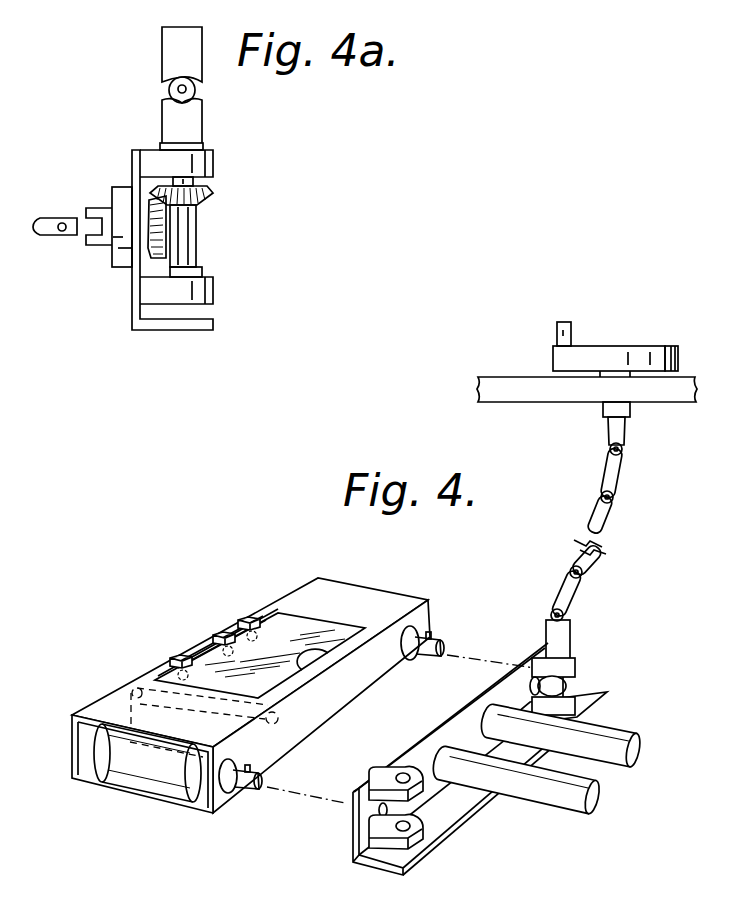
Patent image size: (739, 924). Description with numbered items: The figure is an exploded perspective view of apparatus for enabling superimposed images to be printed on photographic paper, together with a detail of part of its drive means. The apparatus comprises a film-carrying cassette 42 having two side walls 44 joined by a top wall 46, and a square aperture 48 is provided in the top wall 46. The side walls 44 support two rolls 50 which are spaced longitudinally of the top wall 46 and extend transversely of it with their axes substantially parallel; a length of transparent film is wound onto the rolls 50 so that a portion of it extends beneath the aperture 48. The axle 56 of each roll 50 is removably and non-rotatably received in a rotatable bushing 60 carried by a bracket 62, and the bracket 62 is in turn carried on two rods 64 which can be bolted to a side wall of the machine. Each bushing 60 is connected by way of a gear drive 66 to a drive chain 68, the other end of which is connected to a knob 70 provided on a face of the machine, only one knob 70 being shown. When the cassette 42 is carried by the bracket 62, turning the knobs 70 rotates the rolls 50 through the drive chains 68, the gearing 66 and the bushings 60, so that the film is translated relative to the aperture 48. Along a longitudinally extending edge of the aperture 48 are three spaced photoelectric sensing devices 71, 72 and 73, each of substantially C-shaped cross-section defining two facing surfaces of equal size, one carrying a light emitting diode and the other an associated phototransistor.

In FIG. 4, the film-carrying cassette 42 is at (368, 585).
In FIG. 4, the side walls 44 is at (335, 716).
In FIG. 4, the top wall 46 is at (187, 722).
In FIG. 4, the square aperture 48 is at (322, 666).
In FIG. 4, the rolls 50 is at (178, 780).
In FIG. 4A, the axle 56 is at (50, 218).
In FIG. 4, the axle 56 is at (432, 643).
In FIG. 4A, the rotatable bushing 60 is at (95, 248).
In FIG. 4, the bracket 62 is at (421, 736).
In FIG. 4, the rods 64 is at (637, 753).
In FIG. 4A, the gear drive 66 is at (200, 248).
In FIG. 4, the gear drive 66 is at (553, 692).
In FIG. 4A, the drive chain 68 is at (163, 55).
In FIG. 4, the drive chain 68 is at (607, 481).
In FIG. 4, the knob 70 is at (625, 348).
In FIG. 4, the photoelectric sensing device 71 is at (170, 662).
In FIG. 4, the photoelectric sensing device 72 is at (213, 638).
In FIG. 4, the photoelectric sensing device 73 is at (238, 621).